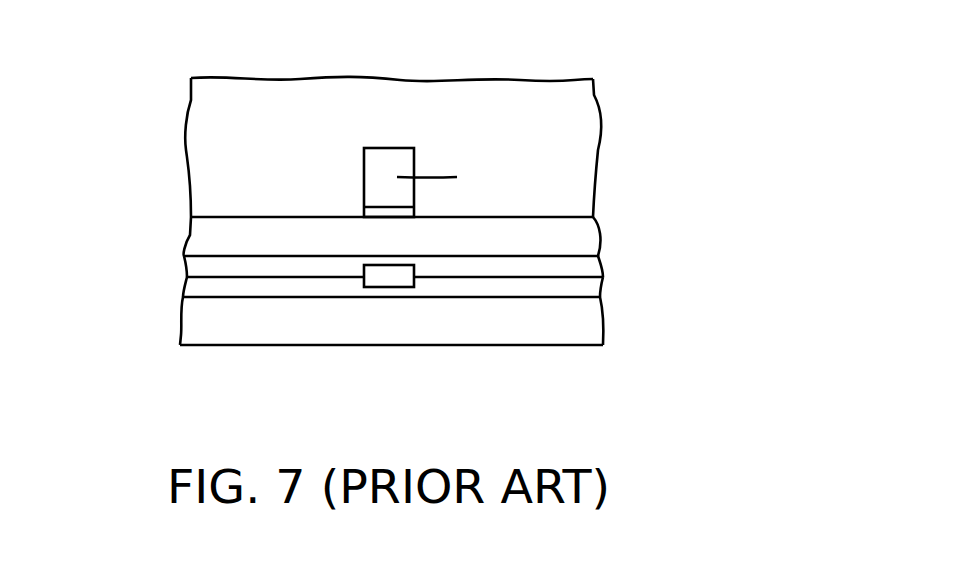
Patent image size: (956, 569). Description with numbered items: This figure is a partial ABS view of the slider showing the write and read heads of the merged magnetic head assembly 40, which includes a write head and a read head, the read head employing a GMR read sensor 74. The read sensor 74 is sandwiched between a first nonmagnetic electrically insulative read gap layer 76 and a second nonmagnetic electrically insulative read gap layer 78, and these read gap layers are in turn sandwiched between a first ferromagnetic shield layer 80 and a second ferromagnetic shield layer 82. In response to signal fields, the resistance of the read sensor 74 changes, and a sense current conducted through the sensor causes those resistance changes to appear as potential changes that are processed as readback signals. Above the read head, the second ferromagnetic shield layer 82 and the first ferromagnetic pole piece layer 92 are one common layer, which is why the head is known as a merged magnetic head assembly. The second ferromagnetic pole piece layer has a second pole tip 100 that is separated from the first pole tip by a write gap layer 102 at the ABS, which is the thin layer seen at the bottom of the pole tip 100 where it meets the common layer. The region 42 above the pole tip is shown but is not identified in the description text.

The merged magnetic head assembly 40 is at (413, 225).
The substrate / top layer 42 is at (197, 113).
The second pole tip 100 is at (397, 155).
The write gap layer 102 is at (390, 212).
The second ferromagnetic shield layer 82 is at (315, 236).
The first ferromagnetic pole piece layer 92 is at (197, 237).
The second nonmagnetic electrically insulative read gap layer 78 is at (550, 267).
The GMR read sensor 74 is at (392, 278).
The first nonmagnetic electrically insulative read gap layer 76 is at (242, 292).
The first ferromagnetic shield layer 80 is at (436, 351).